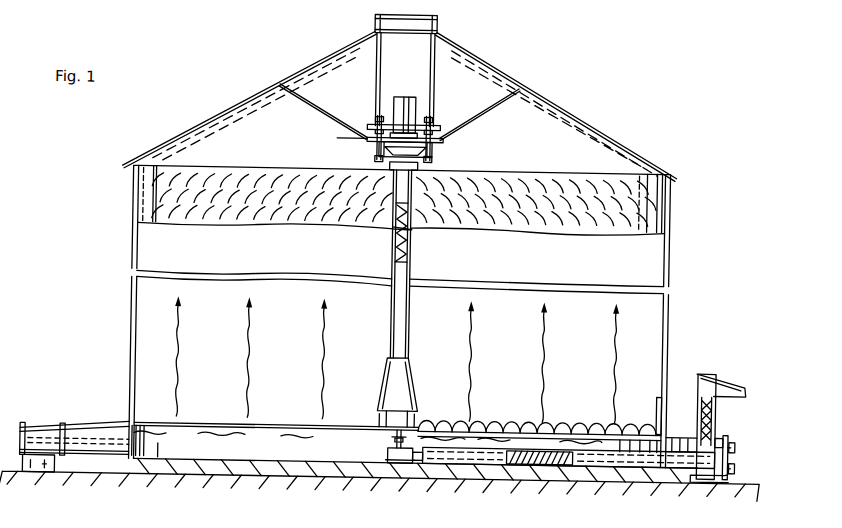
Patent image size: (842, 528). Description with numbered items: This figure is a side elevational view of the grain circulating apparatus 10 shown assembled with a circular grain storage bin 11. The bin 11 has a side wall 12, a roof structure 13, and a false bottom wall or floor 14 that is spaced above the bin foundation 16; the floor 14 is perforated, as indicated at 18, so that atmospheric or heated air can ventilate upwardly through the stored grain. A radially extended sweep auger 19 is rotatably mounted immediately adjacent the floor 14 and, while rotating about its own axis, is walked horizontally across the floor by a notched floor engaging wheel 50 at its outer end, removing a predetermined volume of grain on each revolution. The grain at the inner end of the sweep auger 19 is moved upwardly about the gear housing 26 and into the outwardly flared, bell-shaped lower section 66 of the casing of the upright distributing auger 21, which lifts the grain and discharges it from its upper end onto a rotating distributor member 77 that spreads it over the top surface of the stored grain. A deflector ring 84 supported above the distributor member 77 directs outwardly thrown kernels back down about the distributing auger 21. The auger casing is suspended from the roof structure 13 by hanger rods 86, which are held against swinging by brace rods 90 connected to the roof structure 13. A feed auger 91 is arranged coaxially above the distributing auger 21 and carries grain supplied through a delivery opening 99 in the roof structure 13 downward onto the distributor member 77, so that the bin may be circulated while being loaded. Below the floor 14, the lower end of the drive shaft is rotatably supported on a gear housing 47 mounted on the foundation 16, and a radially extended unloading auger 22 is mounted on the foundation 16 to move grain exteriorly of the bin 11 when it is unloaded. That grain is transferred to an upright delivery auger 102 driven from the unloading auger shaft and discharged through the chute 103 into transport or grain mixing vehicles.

The grain circulating apparatus 10 is at (418, 307).
The circular grain storage bin 11 is at (680, 236).
The side wall 12 is at (131, 309).
The roof structure 13 is at (169, 141).
The false bottom wall or floor 14 is at (147, 435).
The bin foundation 16 is at (405, 475).
The perforations 18 is at (269, 431).
The sweep auger 19 is at (575, 424).
The upright distributing auger 21 is at (409, 240).
The unloading auger 22 is at (469, 458).
The gear housing 26 is at (392, 428).
The gear housing 47 is at (399, 462).
The floor engaging wheel 50 is at (667, 405).
The bell-shaped lower casing section 66 is at (408, 381).
The distributor member 77 is at (446, 147).
The deflector ring 84 is at (406, 111).
The hanger rods 86 is at (372, 68).
The brace rods 90 is at (309, 90).
The feed auger 91 is at (413, 103).
The delivery opening 99 is at (430, 15).
The upright delivery auger 102 is at (731, 409).
The chute 103 is at (731, 380).